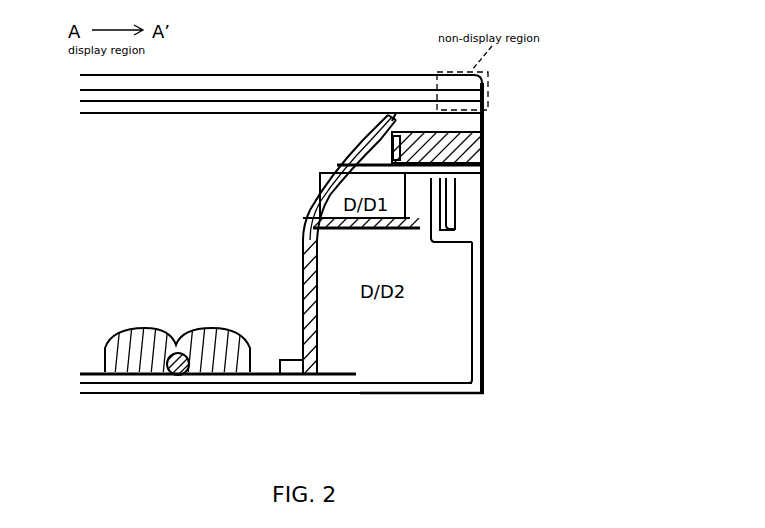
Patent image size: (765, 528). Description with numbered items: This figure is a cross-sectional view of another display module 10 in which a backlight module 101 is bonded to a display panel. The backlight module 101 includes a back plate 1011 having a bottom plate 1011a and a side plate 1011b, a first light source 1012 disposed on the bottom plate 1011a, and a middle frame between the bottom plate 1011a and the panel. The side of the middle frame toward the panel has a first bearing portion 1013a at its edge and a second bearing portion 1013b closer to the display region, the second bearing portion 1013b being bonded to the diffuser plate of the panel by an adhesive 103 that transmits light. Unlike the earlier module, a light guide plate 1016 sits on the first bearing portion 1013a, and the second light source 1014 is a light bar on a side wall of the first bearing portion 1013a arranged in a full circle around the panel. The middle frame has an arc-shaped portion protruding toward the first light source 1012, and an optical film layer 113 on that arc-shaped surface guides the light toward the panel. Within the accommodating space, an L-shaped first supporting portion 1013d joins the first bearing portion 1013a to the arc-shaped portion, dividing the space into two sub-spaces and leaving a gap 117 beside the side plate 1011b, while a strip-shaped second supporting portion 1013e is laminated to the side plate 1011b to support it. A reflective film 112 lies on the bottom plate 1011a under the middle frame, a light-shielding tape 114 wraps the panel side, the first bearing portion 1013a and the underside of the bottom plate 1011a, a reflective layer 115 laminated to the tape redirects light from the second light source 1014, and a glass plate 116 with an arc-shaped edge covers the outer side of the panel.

The display module 10 is at (298, 432).
The backlight module 101 is at (486, 245).
The back plate 1011 is at (478, 290).
The bottom plate 1011a is at (410, 395).
The side plate 1011b is at (473, 348).
The first light source 1012 is at (178, 364).
The first bearing portion 1013a is at (470, 165).
The second bearing portion 1013b is at (386, 114).
The first supporting portion 1013d is at (345, 231).
The second supporting portion 1013e is at (447, 210).
The second light source 1014 is at (486, 186).
The light guide plate 1016 is at (487, 153).
The first adhesive 103 is at (389, 113).
The reflective film 112 is at (346, 372).
The optical film layer 113 is at (322, 190).
The light-shielding tape 114 is at (486, 380).
The reflective layer 115 is at (484, 128).
The glass plate 116 is at (428, 80).
The gap 117 is at (428, 225).